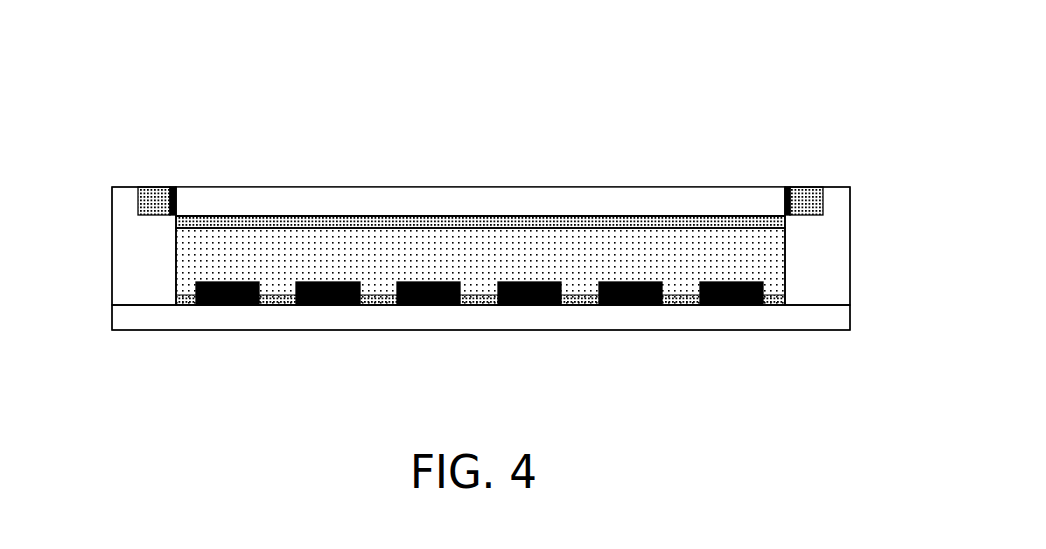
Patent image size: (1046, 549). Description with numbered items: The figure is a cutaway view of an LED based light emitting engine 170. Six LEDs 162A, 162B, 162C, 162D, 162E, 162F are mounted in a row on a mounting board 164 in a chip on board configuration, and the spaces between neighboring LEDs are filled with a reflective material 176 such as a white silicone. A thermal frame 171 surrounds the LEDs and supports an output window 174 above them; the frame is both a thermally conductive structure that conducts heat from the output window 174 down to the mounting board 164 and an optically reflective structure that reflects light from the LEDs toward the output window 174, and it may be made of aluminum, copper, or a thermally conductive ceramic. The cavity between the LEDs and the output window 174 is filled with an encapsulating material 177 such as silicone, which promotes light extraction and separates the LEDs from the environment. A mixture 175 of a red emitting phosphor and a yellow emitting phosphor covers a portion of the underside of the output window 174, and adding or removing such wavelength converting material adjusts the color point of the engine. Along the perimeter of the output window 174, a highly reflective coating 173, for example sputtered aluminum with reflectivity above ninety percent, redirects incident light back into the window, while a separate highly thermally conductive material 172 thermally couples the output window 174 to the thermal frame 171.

The LED based light emitting engine 170 is at (775, 75).
The thermal frame 171 is at (135, 251).
The highly thermally conductive material 172 is at (148, 188).
The highly reflective coating 173 is at (171, 187).
The output window 174 is at (568, 203).
The mixture 175 is at (298, 222).
The reflective material 176 is at (282, 305).
The encapsulating material 177 is at (668, 258).
The mounting board 164 is at (179, 323).
The LED 162A is at (235, 305).
The LED 162B is at (332, 305).
The LED 162C is at (432, 305).
The LED 162D is at (530, 305).
The LED 162E is at (633, 305).
The LED 162F is at (730, 305).